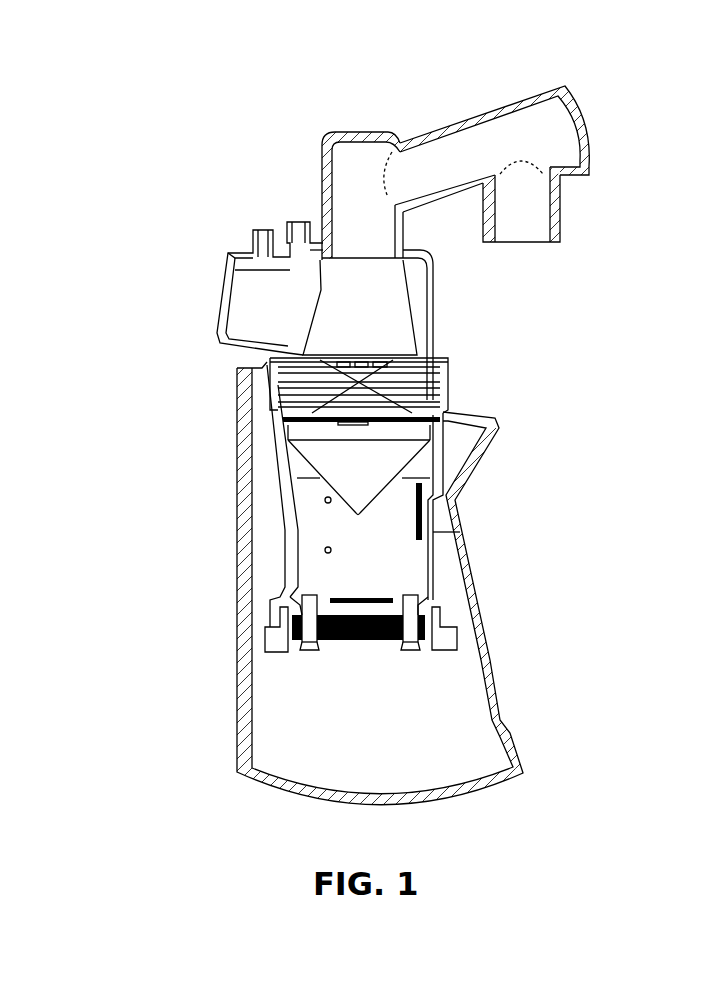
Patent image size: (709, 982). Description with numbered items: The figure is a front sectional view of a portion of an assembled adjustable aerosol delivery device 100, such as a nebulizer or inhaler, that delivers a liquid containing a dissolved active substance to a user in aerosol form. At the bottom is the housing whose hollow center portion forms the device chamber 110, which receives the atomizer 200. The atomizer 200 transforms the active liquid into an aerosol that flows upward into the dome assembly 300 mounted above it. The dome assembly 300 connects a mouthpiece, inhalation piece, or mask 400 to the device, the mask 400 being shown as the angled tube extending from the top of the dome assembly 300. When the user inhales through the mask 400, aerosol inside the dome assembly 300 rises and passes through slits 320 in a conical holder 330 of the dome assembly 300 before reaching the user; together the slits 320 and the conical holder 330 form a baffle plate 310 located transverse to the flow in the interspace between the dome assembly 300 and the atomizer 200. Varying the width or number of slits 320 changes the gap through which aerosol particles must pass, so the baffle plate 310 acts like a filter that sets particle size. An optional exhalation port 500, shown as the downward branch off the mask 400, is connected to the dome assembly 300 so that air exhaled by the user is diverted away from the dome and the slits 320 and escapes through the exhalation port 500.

The aerosol delivery device 100 is at (214, 156).
The device chamber 110 is at (488, 650).
The atomizer 200 is at (432, 535).
The dome assembly 300 is at (385, 302).
The baffle plate 310 is at (457, 389).
The slits 320 is at (445, 365).
The conical holder 330 is at (400, 357).
The mouthpiece, inhalation piece, or mask 400 is at (540, 122).
The exhalation port 500 is at (533, 205).